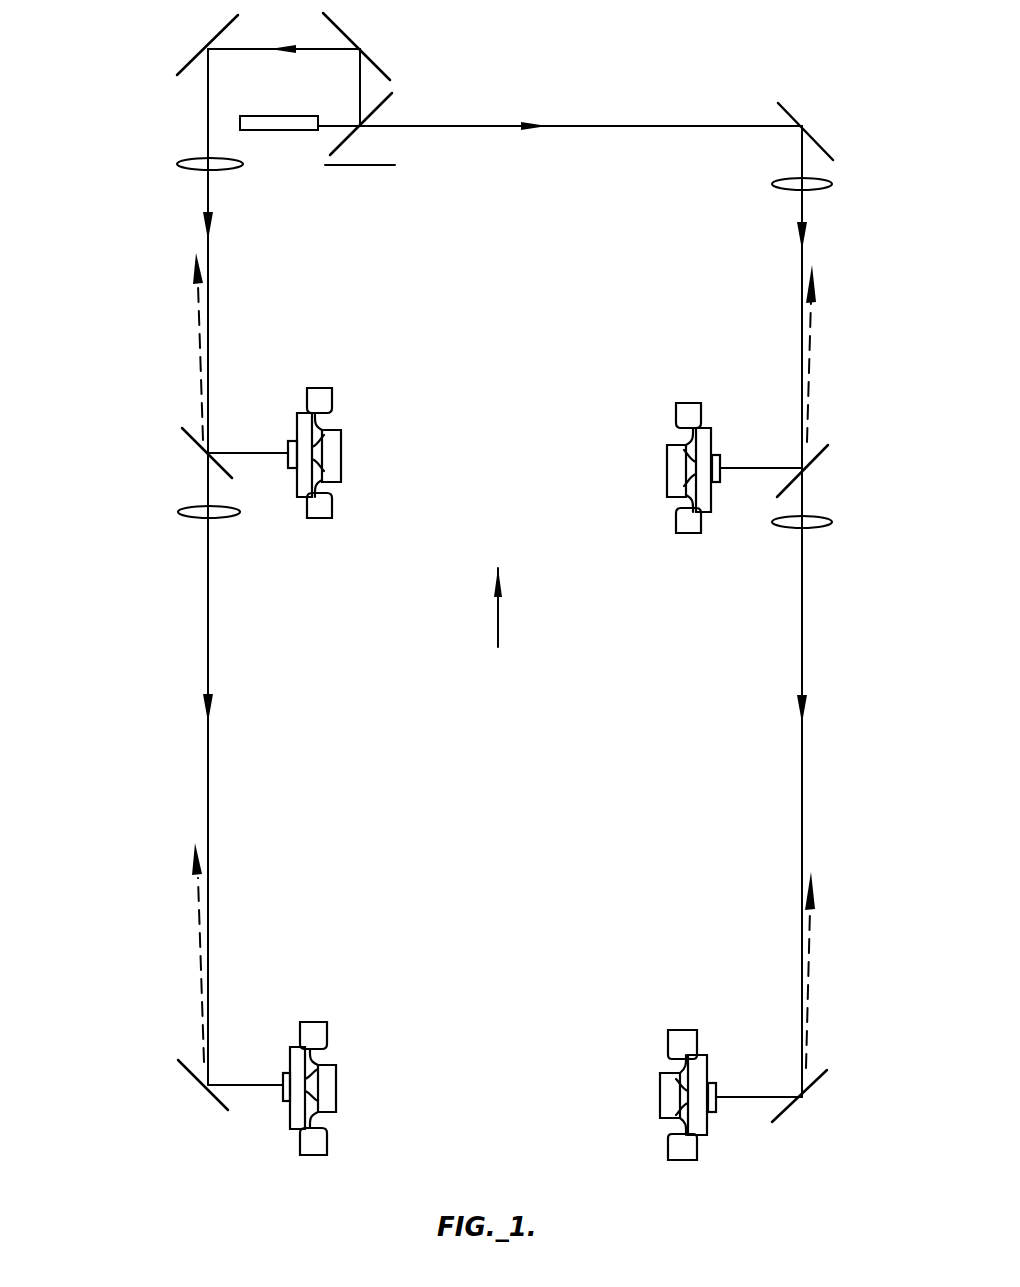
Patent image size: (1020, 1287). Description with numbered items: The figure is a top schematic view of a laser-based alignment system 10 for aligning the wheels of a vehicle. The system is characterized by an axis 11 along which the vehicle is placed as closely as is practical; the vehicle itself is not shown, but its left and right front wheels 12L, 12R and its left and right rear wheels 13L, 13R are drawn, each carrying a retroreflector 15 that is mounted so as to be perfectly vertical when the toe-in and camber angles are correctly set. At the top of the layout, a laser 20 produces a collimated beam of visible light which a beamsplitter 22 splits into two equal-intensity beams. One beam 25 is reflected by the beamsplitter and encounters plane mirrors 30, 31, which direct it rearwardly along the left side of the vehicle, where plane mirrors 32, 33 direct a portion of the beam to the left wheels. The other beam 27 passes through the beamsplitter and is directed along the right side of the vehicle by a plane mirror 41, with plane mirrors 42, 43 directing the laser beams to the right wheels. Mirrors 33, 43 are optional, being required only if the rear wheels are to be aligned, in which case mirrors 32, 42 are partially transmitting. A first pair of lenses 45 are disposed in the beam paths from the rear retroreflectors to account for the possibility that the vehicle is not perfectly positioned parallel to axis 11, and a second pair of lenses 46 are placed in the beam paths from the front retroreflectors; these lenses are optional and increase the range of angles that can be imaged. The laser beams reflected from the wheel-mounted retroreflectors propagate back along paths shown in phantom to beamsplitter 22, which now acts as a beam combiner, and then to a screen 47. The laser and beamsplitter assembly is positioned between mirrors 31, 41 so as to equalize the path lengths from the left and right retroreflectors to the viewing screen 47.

The laser-based alignment system 10 is at (118, 871).
The axis 11 is at (500, 617).
The left front wheel 12L is at (332, 394).
The right front wheel 12R is at (683, 402).
The left rear wheel 13L is at (327, 1026).
The right rear wheel 13R is at (680, 1030).
The retroreflector 15 is at (286, 464).
The laser 20 is at (270, 116).
The beamsplitter 22 is at (350, 134).
The beam 25 is at (262, 48).
The beam 27 is at (447, 124).
The plane mirror 30 is at (344, 28).
The plane mirror 31 is at (226, 30).
The plane mirror 32 is at (194, 450).
The plane mirror 33 is at (190, 1074).
The plane mirror 41 is at (818, 138).
The plane mirror 42 is at (816, 456).
The plane mirror 43 is at (808, 1084).
The first pair of lenses 45 is at (194, 517).
The second pair of lenses 46 is at (186, 170).
The screen 47 is at (352, 170).